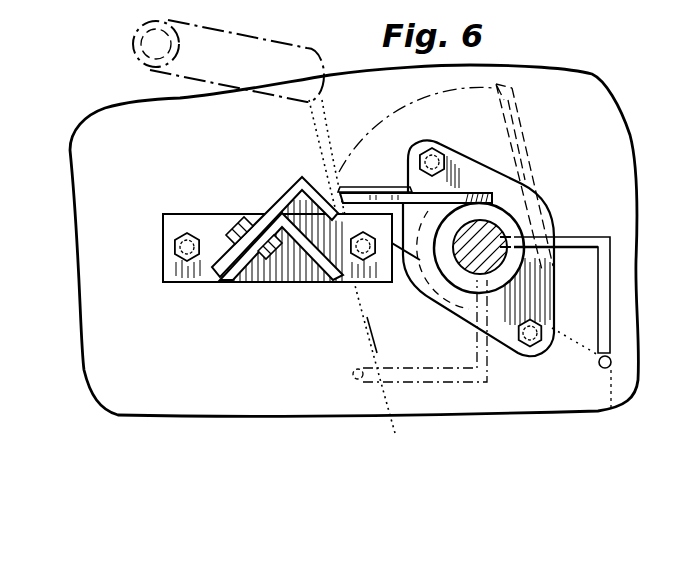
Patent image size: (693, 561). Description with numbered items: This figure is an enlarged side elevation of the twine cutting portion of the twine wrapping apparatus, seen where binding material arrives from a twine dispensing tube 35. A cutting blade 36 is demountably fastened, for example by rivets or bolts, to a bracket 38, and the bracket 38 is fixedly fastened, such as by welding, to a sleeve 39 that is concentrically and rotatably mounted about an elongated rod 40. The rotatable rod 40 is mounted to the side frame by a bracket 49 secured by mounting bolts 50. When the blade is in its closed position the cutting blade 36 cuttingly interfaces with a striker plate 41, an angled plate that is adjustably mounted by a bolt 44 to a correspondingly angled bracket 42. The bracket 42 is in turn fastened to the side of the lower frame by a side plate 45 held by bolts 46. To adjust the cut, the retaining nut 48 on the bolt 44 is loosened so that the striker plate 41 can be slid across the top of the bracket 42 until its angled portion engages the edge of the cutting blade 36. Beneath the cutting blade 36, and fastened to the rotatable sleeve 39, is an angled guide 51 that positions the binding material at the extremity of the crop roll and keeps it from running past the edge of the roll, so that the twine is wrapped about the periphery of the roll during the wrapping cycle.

The twine dispensing tube 35 is at (252, 35).
The cutting blade 36 is at (356, 192).
The bracket 38 is at (463, 183).
The sleeve 39 is at (507, 209).
The elongated rod 40 is at (472, 277).
The striker plate 41 is at (300, 177).
The bracket 42 is at (226, 285).
The bolt 44 is at (240, 216).
The side plate 45 is at (164, 274).
The bolt 46 is at (176, 243).
The retaining nut 48 is at (263, 275).
The bracket 49 is at (420, 142).
The mounting bolt 50 is at (440, 158).
The angled guide 51 is at (612, 285).